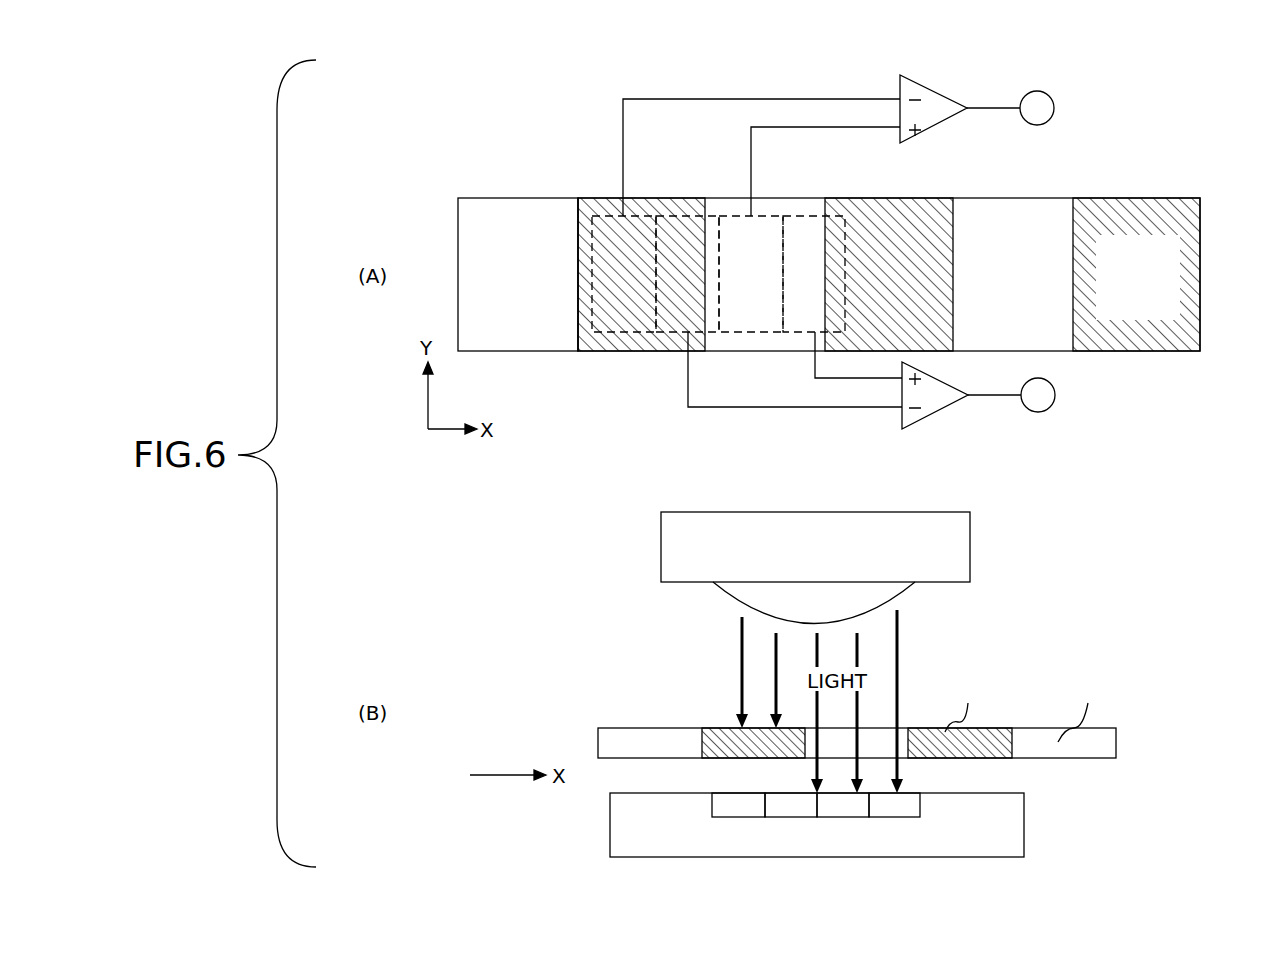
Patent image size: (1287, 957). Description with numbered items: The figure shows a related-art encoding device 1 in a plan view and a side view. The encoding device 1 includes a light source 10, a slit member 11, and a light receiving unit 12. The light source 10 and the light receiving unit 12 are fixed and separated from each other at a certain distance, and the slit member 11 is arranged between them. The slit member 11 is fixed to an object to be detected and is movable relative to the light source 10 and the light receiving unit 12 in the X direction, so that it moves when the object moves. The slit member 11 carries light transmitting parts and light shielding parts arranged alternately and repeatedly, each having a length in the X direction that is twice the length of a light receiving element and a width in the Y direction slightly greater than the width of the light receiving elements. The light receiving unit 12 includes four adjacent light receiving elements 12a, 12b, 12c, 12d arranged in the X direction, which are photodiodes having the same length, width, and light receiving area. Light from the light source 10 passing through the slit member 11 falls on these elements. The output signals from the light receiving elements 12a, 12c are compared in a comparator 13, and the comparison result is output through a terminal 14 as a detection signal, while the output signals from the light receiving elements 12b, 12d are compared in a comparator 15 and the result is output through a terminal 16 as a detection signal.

The encoding device 1 is at (465, 98).
The light source 10 is at (970, 561).
The slit member 11 is at (1200, 243).
The light receiving unit 12 is at (1024, 831).
The light receiving element 12a is at (606, 212).
The light receiving element 12b is at (668, 212).
The light receiving element 12c is at (730, 212).
The light receiving element 12d is at (794, 212).
The comparator 13 is at (900, 81).
The terminal 14 is at (1037, 91).
The comparator 15 is at (902, 420).
The terminal 16 is at (1038, 412).